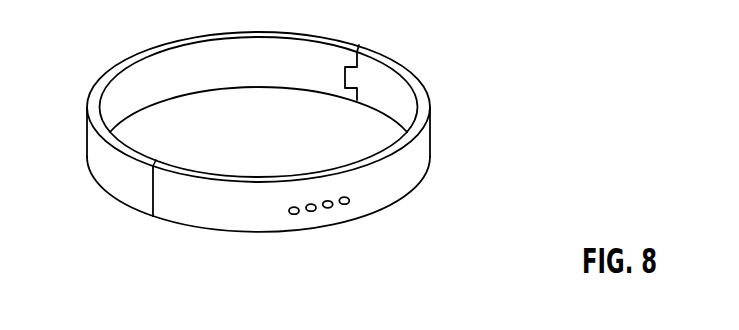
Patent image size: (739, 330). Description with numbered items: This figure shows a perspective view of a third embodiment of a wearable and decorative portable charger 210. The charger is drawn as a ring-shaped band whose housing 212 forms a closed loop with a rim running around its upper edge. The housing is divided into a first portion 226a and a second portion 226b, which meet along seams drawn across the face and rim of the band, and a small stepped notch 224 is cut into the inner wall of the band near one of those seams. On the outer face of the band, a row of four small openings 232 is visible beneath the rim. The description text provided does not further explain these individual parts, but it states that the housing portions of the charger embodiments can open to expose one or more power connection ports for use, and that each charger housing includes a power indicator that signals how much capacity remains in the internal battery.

The wearable band device 210 is at (293, 148).
The band housing segment 212 is at (118, 65).
The notch / gap in band 224 is at (372, 44).
The first band portion (rim) 226a is at (203, 37).
The second band portion 226b is at (418, 165).
The electrical contacts 232 is at (319, 220).